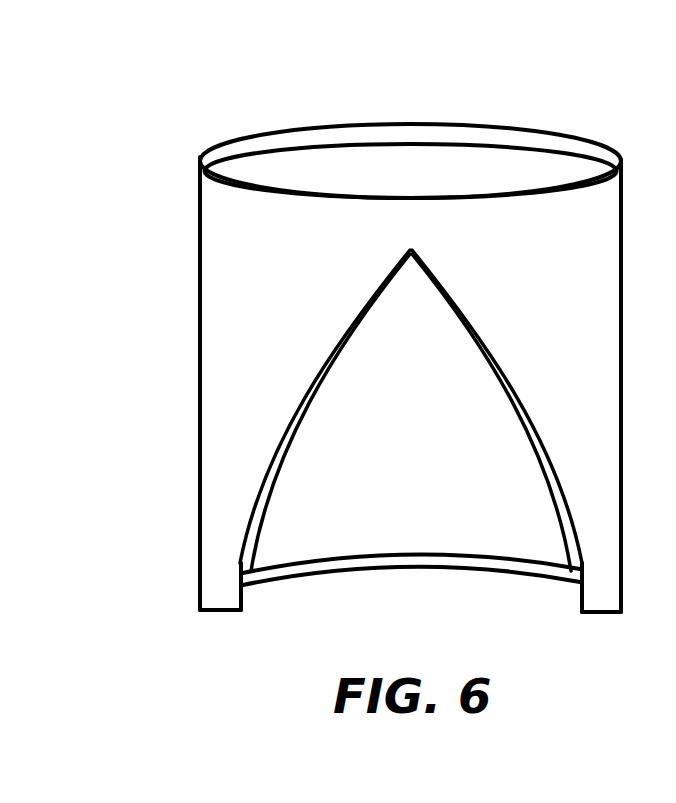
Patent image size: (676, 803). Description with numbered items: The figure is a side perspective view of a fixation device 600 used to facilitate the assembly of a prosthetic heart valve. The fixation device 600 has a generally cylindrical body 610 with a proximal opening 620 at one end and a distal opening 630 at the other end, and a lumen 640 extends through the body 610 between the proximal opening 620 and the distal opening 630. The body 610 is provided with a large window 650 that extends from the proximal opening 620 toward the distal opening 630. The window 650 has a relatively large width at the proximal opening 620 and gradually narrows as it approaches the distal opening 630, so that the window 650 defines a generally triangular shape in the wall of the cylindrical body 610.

The fixation device 600 is at (335, 360).
The cylindrical body 610 is at (198, 241).
The proximal opening 620 is at (261, 616).
The distal opening 630 is at (538, 105).
The lumen 640 is at (329, 164).
The window 650 is at (567, 537).